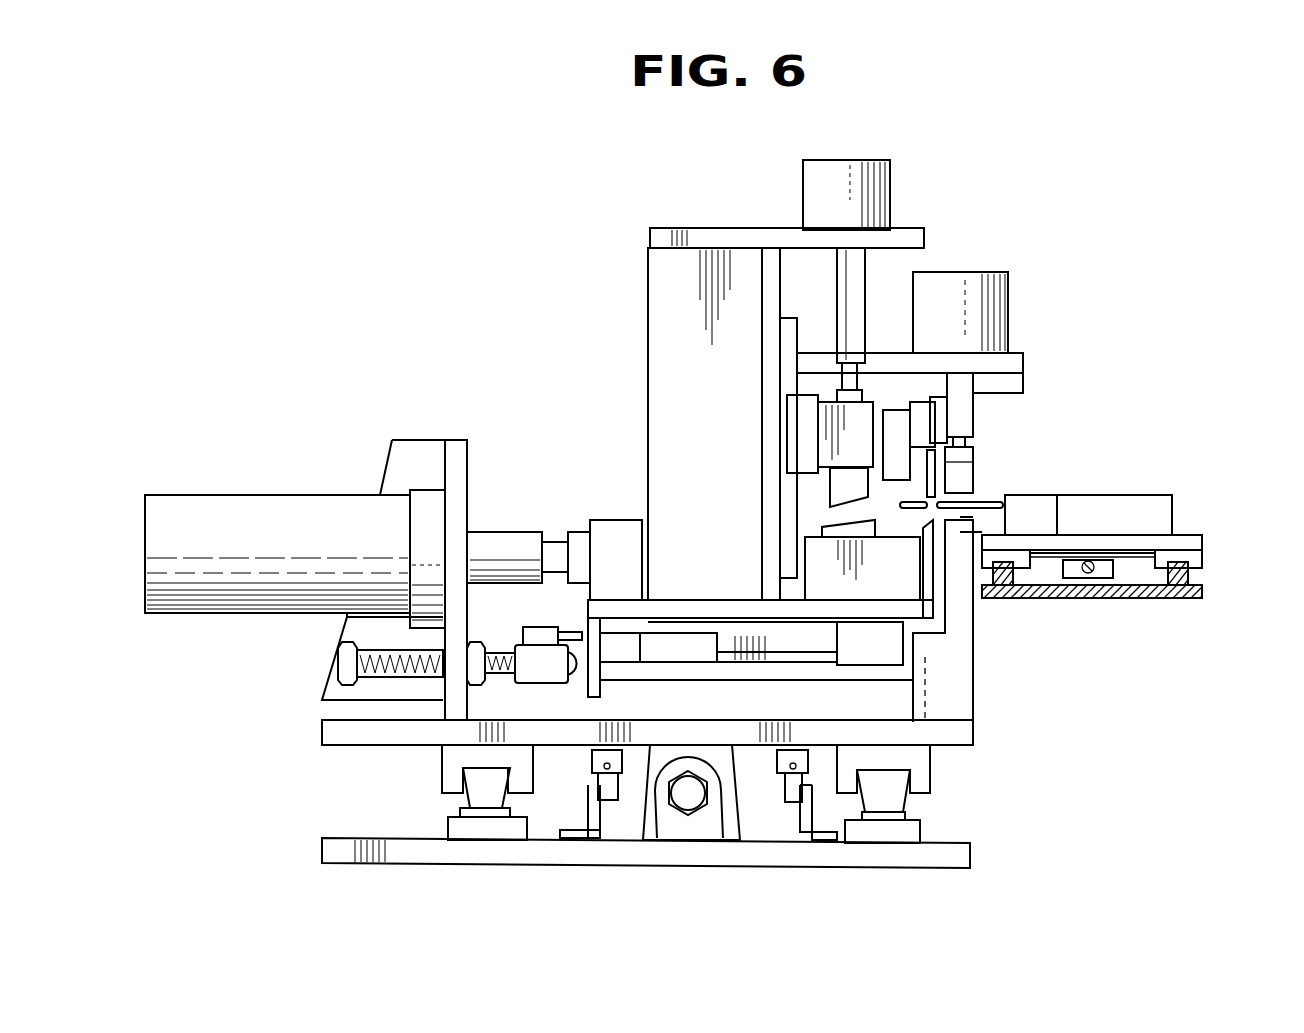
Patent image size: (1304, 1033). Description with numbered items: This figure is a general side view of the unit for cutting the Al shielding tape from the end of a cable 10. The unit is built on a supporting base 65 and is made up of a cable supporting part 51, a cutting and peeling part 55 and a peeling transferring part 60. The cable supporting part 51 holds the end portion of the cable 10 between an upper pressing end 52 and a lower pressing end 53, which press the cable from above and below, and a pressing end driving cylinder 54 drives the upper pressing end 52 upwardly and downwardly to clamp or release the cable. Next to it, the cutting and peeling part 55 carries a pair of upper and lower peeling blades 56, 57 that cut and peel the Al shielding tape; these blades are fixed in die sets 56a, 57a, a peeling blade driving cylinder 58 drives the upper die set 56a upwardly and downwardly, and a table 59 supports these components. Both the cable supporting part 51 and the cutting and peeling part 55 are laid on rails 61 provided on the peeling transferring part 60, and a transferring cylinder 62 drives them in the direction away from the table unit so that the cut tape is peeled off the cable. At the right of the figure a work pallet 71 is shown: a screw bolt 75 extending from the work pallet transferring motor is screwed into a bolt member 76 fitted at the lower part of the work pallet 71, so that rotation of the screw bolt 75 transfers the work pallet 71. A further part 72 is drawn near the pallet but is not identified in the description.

The cable 10 is at (1003, 502).
The cable supporting part 51 is at (1017, 280).
The upper pressing end 52 is at (943, 472).
The lower pressing end 53 is at (960, 532).
The pressing end driving cylinder 54 is at (1003, 318).
The cutting and peeling part 55 is at (643, 323).
The upper peeling blade 56 is at (973, 458).
The upper die set 56a is at (980, 417).
The lower peeling blade 57 is at (912, 578).
The lower die set 57a is at (960, 665).
The peeling blade driving cylinder 58 is at (812, 198).
The table 59 is at (877, 610).
The peeling transferring part 60 is at (558, 522).
The rails 61 is at (818, 667).
The transferring cylinder 62 is at (300, 505).
The supporting base 65 is at (322, 733).
The work pallet 71 is at (1157, 507).
The hatched spacer 72 is at (1193, 575).
The screw bolt 75 is at (1092, 578).
The bolt member 76 is at (1123, 578).